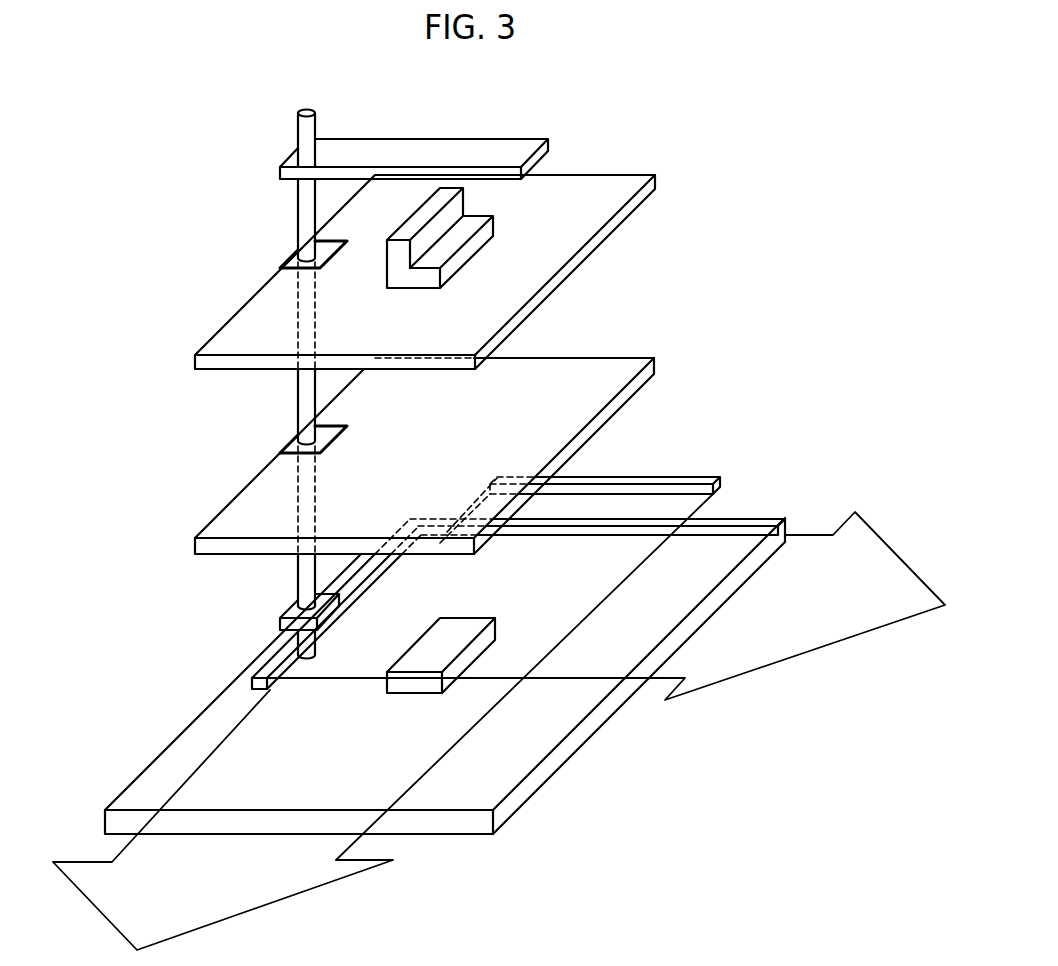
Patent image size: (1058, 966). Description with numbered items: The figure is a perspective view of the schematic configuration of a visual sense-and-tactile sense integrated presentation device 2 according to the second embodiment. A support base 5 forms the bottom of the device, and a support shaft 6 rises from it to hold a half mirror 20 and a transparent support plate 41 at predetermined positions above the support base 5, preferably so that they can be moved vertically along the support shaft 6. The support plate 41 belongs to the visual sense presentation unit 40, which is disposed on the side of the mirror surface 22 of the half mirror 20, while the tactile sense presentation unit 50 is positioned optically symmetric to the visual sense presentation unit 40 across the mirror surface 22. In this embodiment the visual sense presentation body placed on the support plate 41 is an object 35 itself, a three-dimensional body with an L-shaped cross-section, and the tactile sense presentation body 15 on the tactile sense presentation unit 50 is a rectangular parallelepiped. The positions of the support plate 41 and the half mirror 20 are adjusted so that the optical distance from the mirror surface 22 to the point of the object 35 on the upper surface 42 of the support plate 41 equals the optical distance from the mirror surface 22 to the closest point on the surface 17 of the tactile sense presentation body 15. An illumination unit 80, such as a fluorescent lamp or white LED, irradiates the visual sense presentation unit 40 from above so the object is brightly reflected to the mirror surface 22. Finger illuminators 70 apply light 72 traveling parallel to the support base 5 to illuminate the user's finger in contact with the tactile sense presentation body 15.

The integrated presentation device 2 is at (129, 259).
The support base 5 is at (504, 812).
The support shaft 6 is at (298, 210).
The tactile sense presentation body 15 is at (491, 636).
The surface of the tactile sense presentation body 17 is at (456, 634).
The half mirror 20 is at (598, 418).
The mirror surface 22 is at (592, 385).
The object 35 is at (479, 221).
The visual sense presentation unit 40 is at (689, 164).
The support plate 41 is at (648, 193).
The upper surface of the support plate 42 is at (604, 187).
The tactile sense presentation unit 50 is at (721, 516).
The finger illuminator 70 is at (709, 474).
The light 72 is at (805, 535).
The illumination unit 80 is at (410, 146).